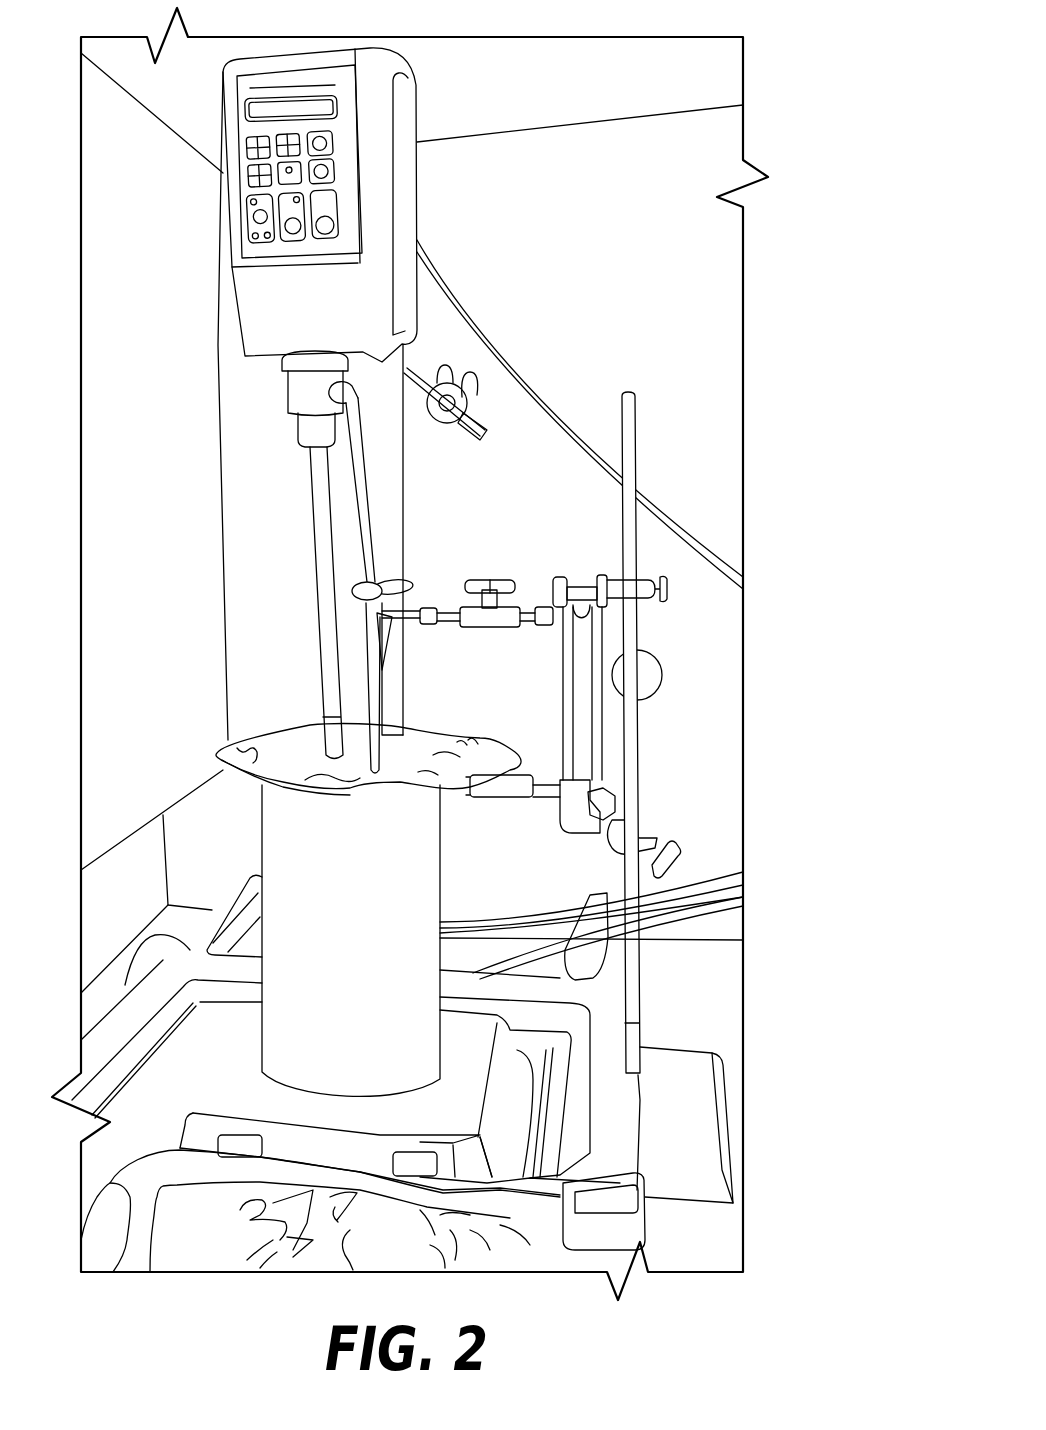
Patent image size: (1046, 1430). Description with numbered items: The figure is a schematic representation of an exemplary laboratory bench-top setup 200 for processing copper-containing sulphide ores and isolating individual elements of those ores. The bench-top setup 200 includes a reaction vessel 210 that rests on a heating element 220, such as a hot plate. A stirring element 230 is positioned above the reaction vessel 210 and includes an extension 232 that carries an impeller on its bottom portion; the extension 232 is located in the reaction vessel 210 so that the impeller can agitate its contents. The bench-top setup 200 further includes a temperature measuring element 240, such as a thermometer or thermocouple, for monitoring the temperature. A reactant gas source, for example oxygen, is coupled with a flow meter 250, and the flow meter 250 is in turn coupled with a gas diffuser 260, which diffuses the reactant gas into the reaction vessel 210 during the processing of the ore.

The bench-top setup 200 is at (808, 45).
The reaction vessel 210 is at (185, 838).
The heating element 220 is at (198, 1295).
The stirring element 230 is at (195, 188).
The extension 232 is at (184, 556).
The temperature measuring element 240 is at (372, 480).
The flow meter 250 is at (617, 783).
The gas diffuser 260 is at (399, 640).